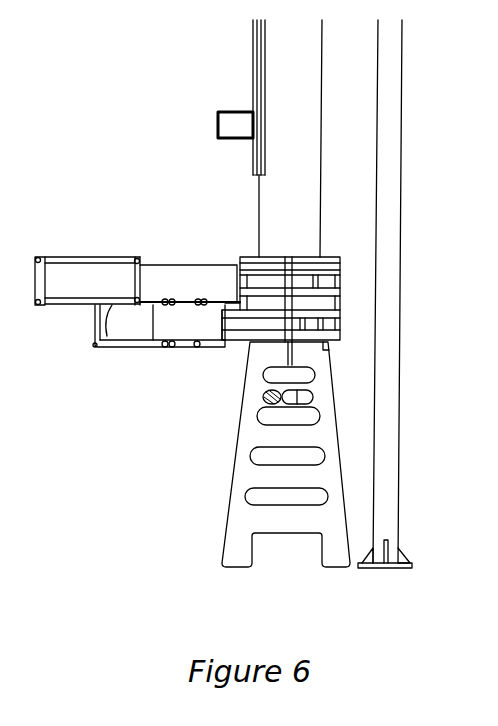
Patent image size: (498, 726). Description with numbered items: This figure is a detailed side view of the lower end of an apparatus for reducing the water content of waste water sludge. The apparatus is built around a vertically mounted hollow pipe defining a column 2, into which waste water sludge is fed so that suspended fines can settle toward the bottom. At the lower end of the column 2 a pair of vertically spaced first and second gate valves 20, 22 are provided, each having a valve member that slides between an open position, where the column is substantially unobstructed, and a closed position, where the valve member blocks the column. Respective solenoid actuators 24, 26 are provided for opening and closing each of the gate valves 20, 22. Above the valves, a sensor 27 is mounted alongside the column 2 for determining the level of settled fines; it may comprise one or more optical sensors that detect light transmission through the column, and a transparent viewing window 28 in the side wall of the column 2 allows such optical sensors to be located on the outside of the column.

The column 2 is at (315, 88).
The first gate valve 20 is at (223, 338).
The second gate valve 22 is at (228, 278).
The solenoid actuator 24 is at (70, 270).
The solenoid actuator 26 is at (121, 330).
The sensor 27 is at (224, 128).
The transparent viewing window 28 is at (253, 88).